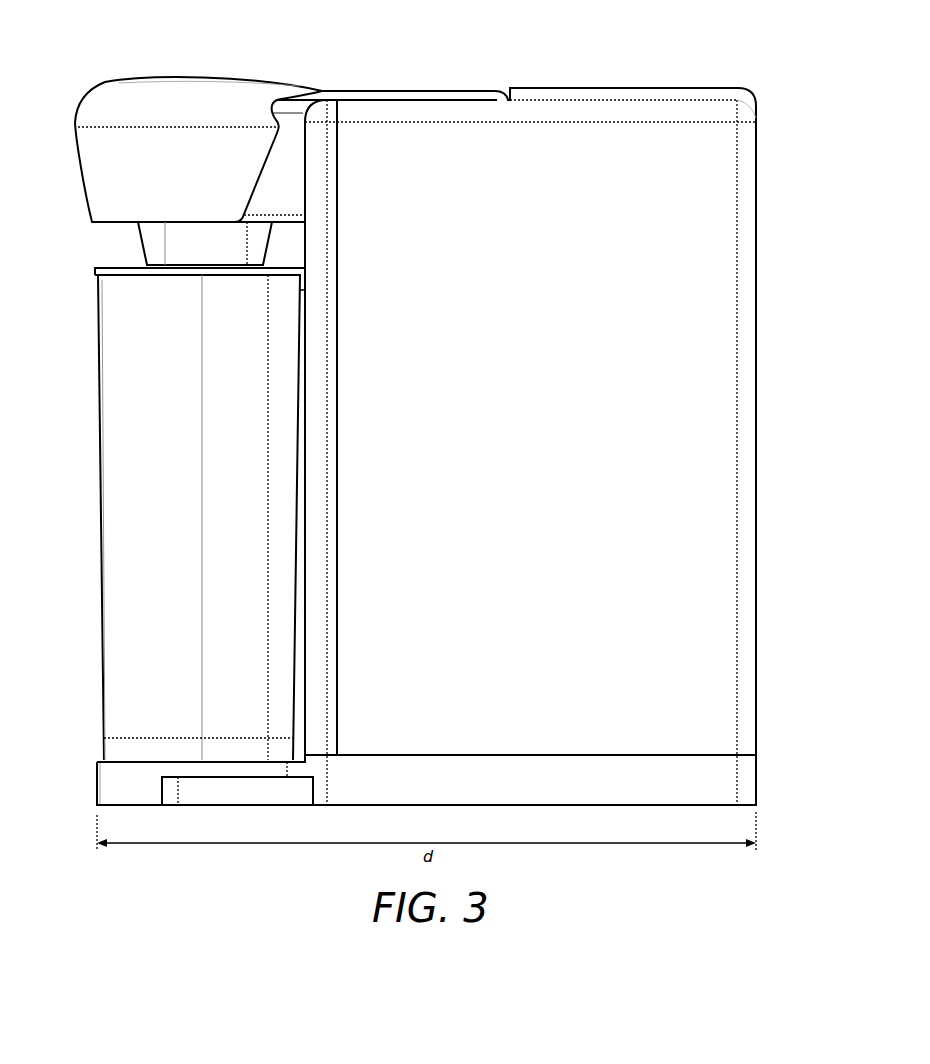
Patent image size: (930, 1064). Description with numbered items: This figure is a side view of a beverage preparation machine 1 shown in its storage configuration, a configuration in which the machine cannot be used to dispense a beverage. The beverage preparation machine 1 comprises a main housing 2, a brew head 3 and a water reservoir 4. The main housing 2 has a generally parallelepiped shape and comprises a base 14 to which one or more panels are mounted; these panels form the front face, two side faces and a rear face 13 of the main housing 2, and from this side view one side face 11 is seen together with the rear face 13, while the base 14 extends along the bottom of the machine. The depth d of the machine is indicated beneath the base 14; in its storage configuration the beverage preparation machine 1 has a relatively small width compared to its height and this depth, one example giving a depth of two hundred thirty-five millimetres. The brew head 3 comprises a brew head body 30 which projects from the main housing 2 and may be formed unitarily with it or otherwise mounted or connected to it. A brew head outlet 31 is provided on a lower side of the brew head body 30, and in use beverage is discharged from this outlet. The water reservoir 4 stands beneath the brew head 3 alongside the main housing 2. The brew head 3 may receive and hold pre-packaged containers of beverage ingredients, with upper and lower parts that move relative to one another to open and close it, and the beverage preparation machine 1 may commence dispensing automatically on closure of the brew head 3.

The beverage preparation machine 1 is at (755, 66).
The main housing 2 is at (719, 405).
The brew head 3 is at (72, 170).
The water reservoir 4 is at (90, 535).
The side face 11 is at (712, 258).
The rear face 13 is at (763, 162).
The base 14 is at (712, 780).
The brew head body 30 is at (88, 103).
The brew head outlet 31 is at (148, 247).